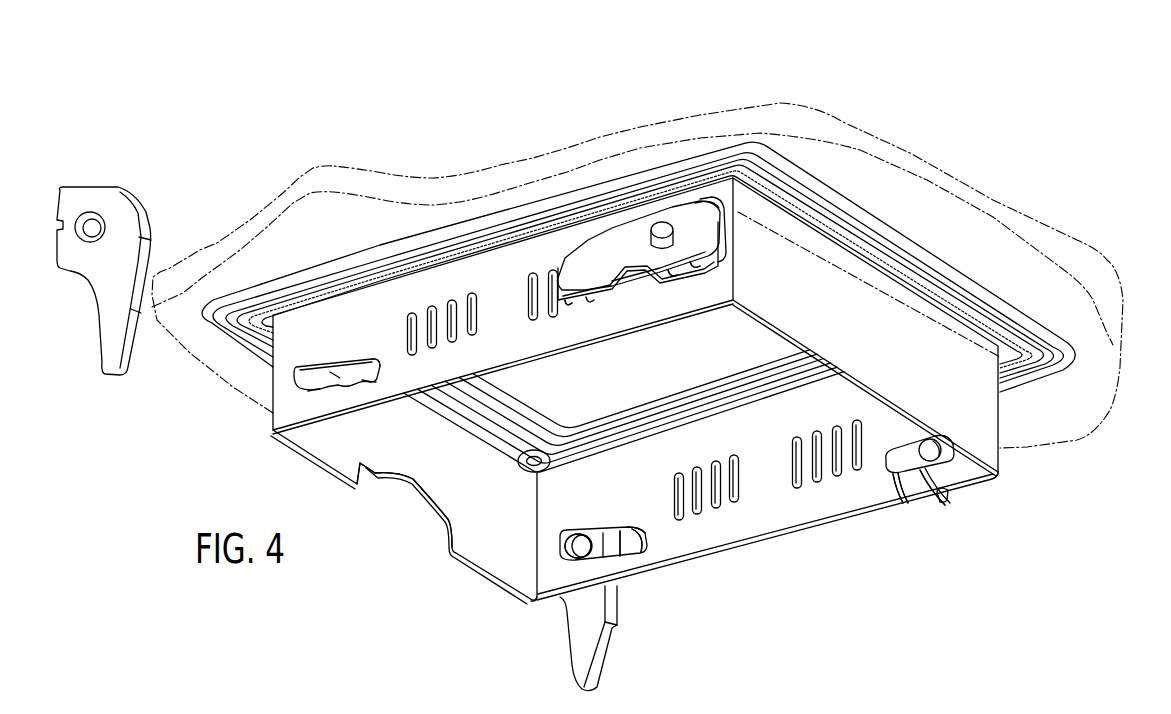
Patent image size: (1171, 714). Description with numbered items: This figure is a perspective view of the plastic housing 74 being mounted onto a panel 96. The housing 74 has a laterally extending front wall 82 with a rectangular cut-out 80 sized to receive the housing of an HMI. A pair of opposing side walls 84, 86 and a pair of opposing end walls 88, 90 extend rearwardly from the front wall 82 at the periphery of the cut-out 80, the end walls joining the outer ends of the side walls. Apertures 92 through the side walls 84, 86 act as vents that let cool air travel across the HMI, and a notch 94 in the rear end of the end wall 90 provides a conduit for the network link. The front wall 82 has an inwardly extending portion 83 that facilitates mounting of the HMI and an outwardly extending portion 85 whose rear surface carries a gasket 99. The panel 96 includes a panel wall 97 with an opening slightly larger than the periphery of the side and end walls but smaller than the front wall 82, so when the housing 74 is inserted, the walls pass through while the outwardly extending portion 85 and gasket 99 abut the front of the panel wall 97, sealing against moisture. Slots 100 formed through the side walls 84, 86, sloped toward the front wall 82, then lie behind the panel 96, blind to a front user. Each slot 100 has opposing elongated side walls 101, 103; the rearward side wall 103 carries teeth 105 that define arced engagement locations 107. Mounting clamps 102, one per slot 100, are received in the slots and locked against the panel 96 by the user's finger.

The housing 74 is at (1083, 359).
The rectangular cut-out 80 is at (531, 413).
The front wall 82 is at (940, 253).
The inwardly extending portion 83 is at (694, 383).
The side wall 84 is at (554, 348).
The outwardly extending portion 85 is at (603, 192).
The side wall 86 is at (738, 540).
The end wall 88 is at (863, 334).
The end wall 90 is at (478, 490).
The apertures 92 is at (523, 311).
The notch 94 is at (387, 532).
The panel 96 is at (843, 122).
The panel wall 97 is at (907, 160).
The gasket 99 is at (562, 222).
The slots 100 is at (291, 374).
The side wall of slot 101 is at (370, 362).
The mounting clamp 102 is at (330, 369).
The side wall of slot 103 is at (348, 390).
The teeth 105 is at (332, 390).
The arced engagement locations 107 is at (373, 383).